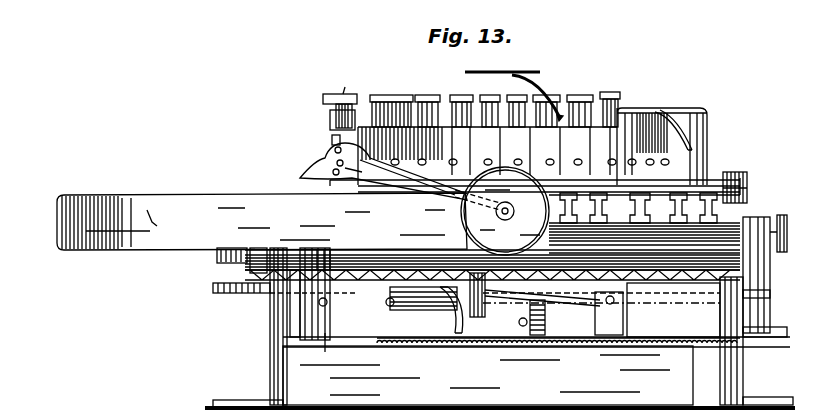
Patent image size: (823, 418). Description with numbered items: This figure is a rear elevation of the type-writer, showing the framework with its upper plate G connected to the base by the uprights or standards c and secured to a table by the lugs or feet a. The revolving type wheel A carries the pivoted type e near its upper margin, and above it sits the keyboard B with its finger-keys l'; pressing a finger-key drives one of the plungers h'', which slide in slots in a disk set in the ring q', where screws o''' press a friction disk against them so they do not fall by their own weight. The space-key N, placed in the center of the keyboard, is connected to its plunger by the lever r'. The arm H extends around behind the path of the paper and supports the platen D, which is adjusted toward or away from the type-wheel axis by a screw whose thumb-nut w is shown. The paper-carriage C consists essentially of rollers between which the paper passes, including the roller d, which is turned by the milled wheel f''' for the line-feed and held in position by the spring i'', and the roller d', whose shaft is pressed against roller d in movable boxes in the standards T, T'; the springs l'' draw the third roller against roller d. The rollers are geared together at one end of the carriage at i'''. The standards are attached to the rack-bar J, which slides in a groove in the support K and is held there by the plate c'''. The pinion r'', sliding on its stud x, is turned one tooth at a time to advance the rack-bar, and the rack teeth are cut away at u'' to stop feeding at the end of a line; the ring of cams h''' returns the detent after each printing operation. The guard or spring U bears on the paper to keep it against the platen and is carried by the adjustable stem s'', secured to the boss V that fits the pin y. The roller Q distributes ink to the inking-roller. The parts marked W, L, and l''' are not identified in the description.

The arm H is at (262, 221).
The roller Q is at (232, 262).
The boss V is at (325, 112).
The pin y is at (348, 81).
The keyboard B is at (481, 100).
The finger-keys l' is at (603, 99).
The space-key N is at (540, 74).
The revolving type wheel A is at (748, 190).
The lever r' is at (673, 118).
The upper plate G is at (740, 182).
The plungers h'' is at (441, 149).
The ring q' is at (548, 149).
The screws o''' is at (636, 151).
The guard or spring U is at (383, 183).
The adjustable stem s'' is at (323, 154).
The platen D is at (514, 212).
The thumb-nut w is at (490, 213).
The paper-carriage C is at (492, 232).
The roller d is at (644, 237).
The roller d' is at (644, 257).
The pivoted type e is at (638, 210).
The milled wheel f''' is at (787, 233).
The spring i'' is at (769, 275).
The springs l'' is at (769, 291).
The standard T is at (774, 320).
The rack-bar J is at (537, 322).
The uprights or standards c is at (505, 326).
The lugs or feet a is at (500, 392).
The extension piece or arm K is at (488, 375).
The standard T' is at (327, 353).
The plate c''' is at (556, 351).
The gearing i''' is at (313, 294).
The bar l''' is at (280, 294).
The cut-away portion of rack teeth u'' is at (405, 310).
The stud x is at (498, 302).
The pinion r'' is at (542, 312).
The bracket W is at (609, 313).
The ring of cams h''' is at (601, 290).
The box L is at (673, 310).